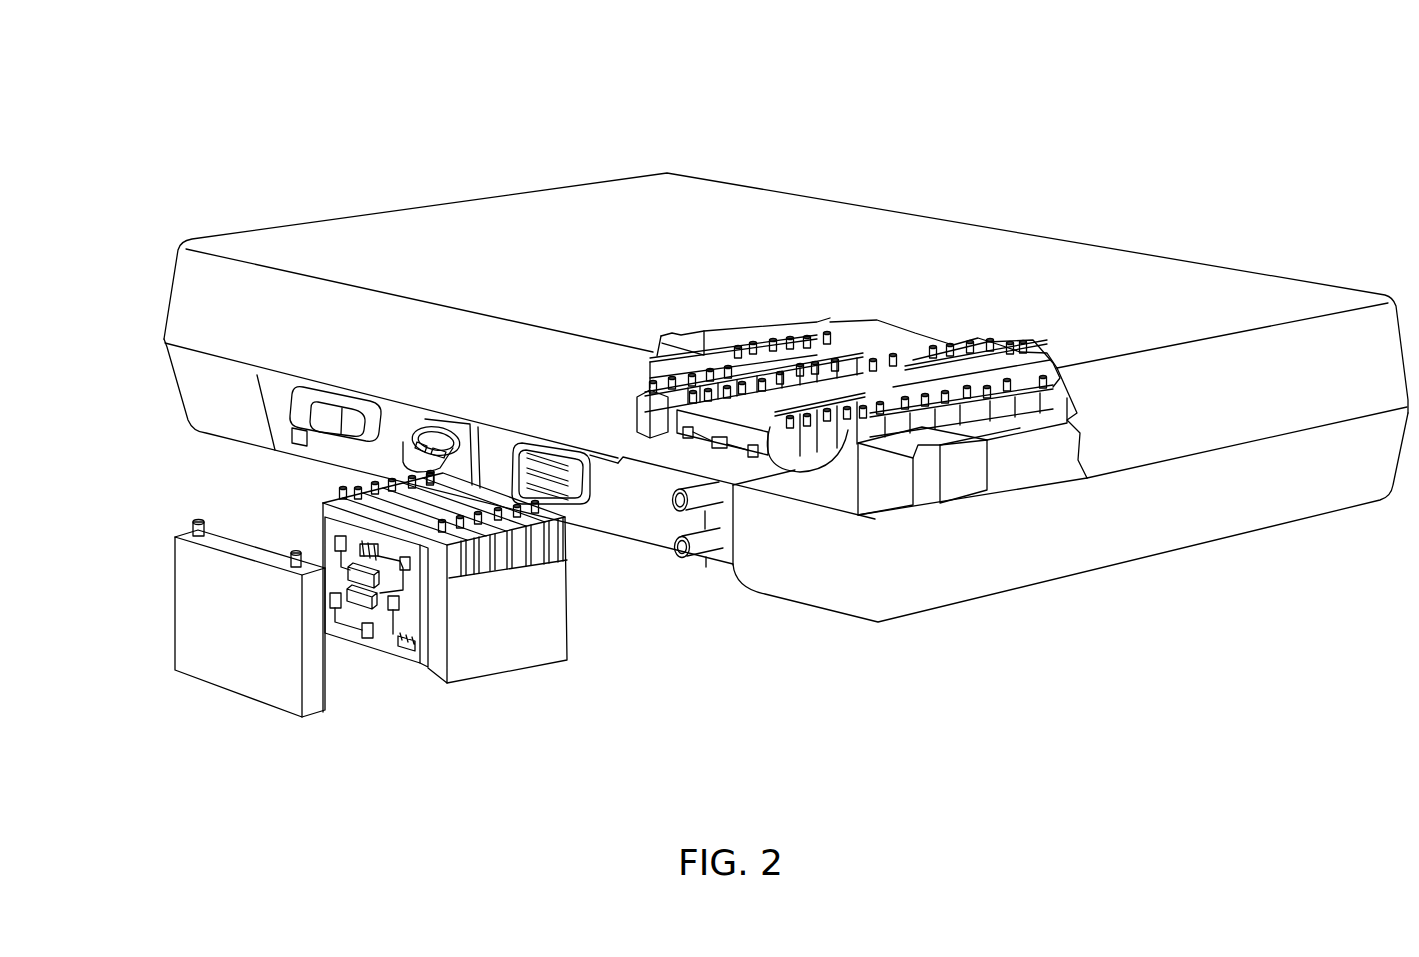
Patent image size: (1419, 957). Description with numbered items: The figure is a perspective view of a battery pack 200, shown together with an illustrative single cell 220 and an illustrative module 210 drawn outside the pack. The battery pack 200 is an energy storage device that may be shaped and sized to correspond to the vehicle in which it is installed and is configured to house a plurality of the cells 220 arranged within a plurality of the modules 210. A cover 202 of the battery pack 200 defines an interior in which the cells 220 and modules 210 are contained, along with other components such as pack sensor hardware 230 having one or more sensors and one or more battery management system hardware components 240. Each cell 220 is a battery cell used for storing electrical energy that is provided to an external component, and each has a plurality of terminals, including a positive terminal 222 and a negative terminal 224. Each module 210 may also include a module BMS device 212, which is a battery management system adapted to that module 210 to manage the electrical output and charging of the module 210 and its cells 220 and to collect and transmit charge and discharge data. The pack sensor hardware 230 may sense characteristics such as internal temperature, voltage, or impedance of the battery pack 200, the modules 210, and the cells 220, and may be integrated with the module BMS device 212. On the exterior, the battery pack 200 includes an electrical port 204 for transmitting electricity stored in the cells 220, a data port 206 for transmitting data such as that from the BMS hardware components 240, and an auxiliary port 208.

The battery pack 200 is at (1258, 133).
The cover 202 is at (186, 286).
The electrical port 204 is at (446, 427).
The data port 206 is at (527, 458).
The auxiliary port 208 is at (730, 528).
The module 210 is at (893, 378).
The module BMS device 212 is at (648, 447).
The cell 220 is at (867, 366).
The positive terminal 222 is at (197, 520).
The negative terminal 224 is at (295, 550).
The pack sensor hardware 230 is at (1058, 433).
The battery management system hardware components 240 is at (968, 478).